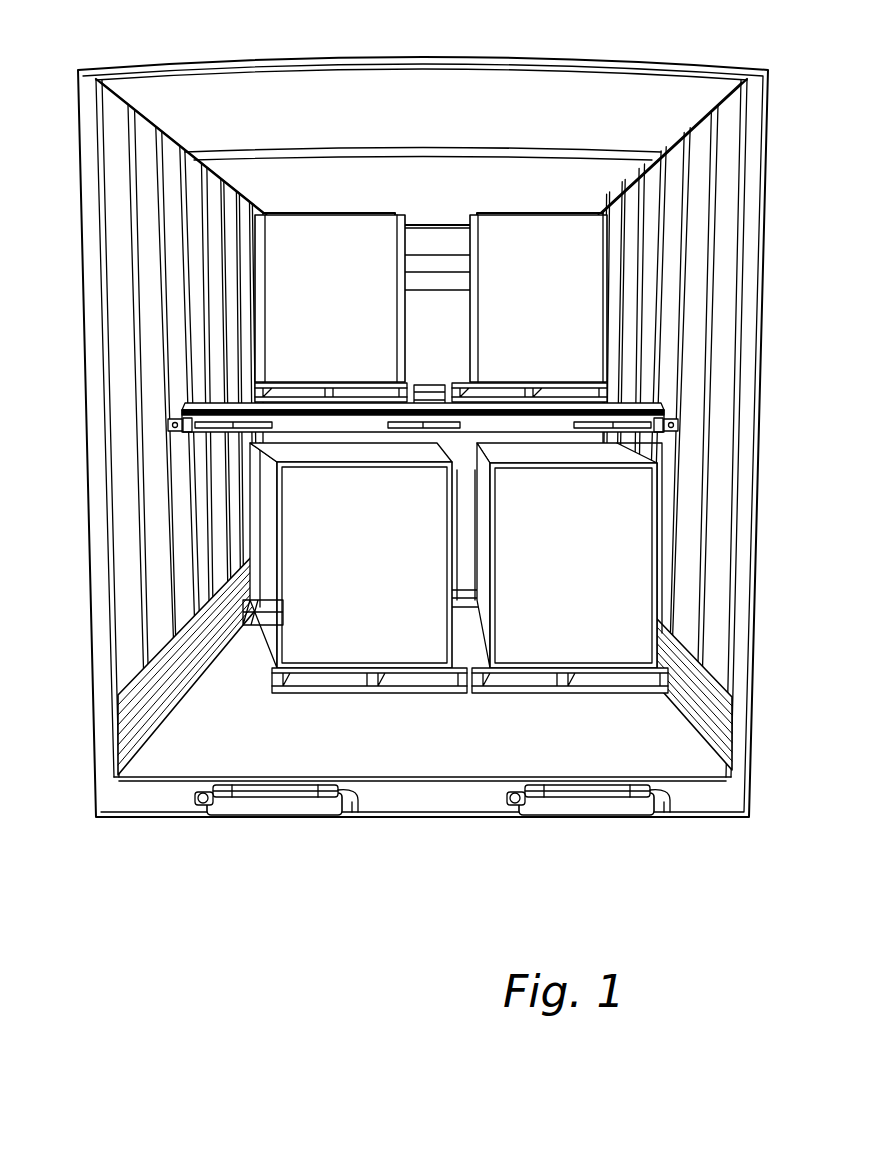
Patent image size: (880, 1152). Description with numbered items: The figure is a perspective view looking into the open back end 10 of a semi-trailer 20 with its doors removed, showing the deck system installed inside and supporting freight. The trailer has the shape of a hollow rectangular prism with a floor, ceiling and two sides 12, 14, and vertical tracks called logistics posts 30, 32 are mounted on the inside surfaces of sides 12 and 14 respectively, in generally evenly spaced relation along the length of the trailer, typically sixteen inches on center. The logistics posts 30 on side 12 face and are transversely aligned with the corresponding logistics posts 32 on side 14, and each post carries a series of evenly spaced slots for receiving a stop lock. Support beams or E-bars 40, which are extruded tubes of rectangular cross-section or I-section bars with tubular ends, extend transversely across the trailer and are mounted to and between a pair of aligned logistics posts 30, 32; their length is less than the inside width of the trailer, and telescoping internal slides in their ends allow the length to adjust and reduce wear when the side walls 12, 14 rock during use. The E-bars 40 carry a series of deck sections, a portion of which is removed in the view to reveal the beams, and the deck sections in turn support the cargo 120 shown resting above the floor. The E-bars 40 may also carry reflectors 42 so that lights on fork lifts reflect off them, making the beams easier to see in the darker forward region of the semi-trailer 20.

The open back end 10 is at (108, 831).
The side 12 is at (146, 428).
The side 14 is at (702, 428).
The semi-trailer 20 is at (598, 58).
The logistics posts 30 is at (157, 312).
The logistics posts 32 is at (690, 268).
The E-bar 40 is at (170, 436).
The reflector 42 is at (640, 401).
The cargo 120 is at (328, 265).